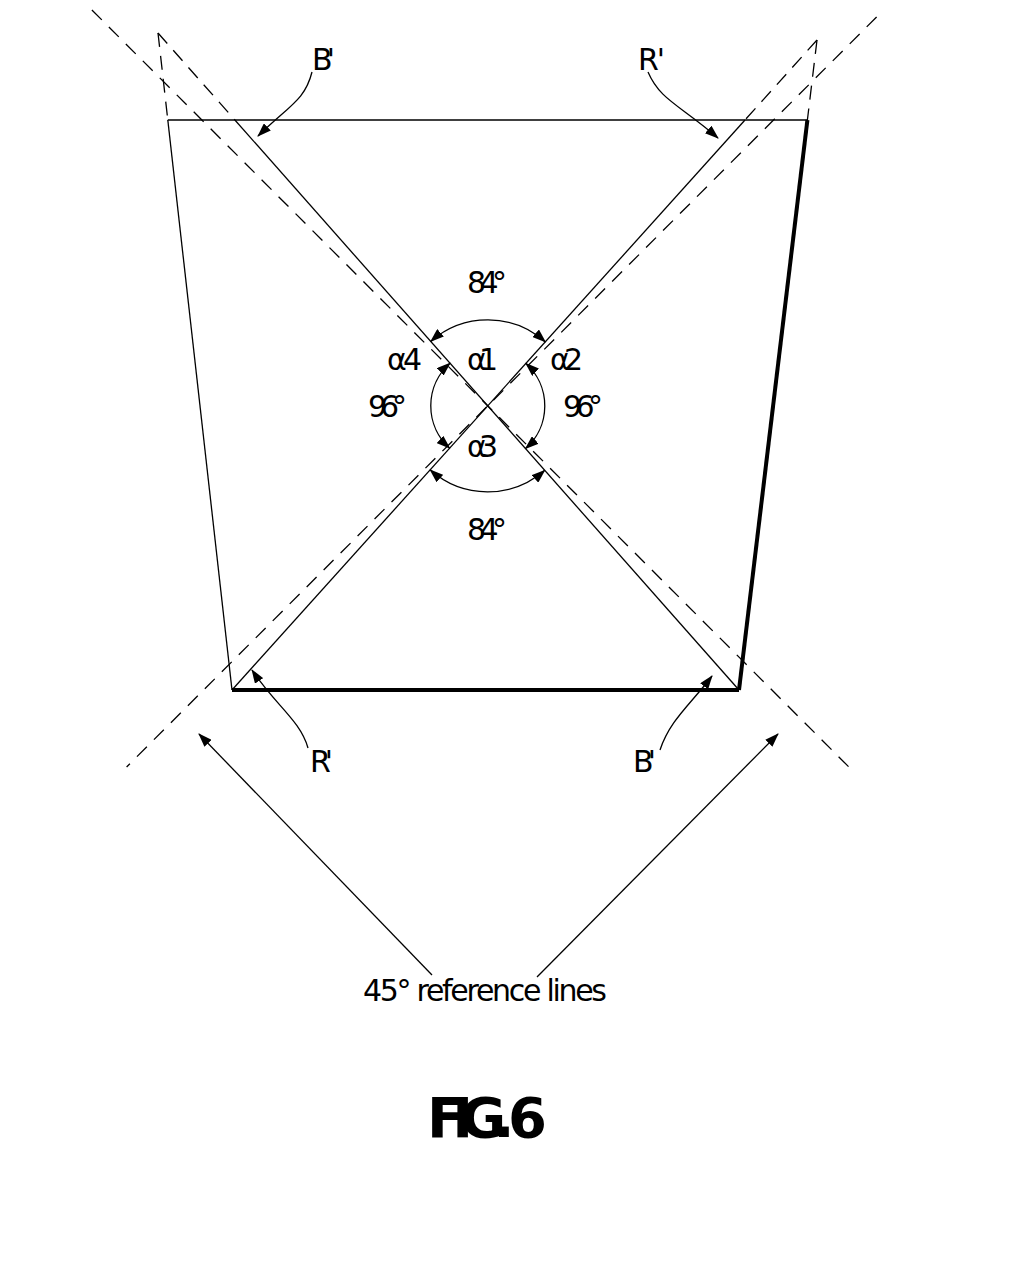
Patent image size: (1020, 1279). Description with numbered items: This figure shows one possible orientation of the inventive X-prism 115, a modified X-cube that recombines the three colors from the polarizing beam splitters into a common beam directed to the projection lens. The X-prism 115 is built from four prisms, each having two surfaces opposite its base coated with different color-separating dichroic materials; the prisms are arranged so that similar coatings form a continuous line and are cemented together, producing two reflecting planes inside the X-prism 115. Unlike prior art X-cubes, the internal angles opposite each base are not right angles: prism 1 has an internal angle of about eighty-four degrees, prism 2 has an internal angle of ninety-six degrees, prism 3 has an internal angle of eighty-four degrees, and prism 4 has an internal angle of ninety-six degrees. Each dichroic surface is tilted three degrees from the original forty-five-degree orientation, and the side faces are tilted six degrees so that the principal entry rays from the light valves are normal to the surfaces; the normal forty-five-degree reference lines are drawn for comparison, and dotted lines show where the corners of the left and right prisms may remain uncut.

The X-prism 115 is at (803, 185).
The prism 1 is at (487, 120).
The prism 2 is at (831, 365).
The prism 3 is at (487, 690).
The prism 4 is at (193, 356).